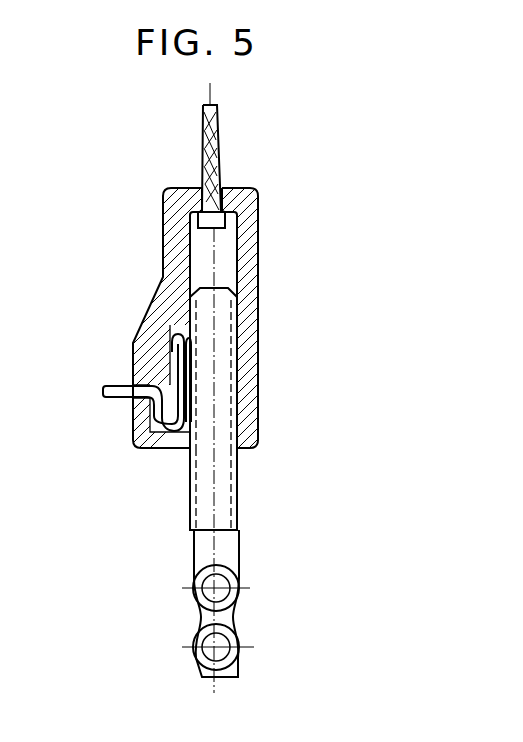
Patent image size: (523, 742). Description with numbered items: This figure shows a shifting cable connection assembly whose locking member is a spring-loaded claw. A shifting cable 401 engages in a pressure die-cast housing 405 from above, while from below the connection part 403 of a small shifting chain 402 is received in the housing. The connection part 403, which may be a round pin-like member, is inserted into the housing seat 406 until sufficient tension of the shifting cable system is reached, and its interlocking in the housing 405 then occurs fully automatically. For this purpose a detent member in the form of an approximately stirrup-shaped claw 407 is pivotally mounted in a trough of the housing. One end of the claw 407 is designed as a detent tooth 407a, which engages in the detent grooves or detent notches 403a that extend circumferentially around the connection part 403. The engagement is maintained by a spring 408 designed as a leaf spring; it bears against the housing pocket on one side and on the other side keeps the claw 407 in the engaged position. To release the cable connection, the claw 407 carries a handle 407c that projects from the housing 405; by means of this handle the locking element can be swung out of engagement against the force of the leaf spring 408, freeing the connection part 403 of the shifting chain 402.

The shifting cable 401 is at (217, 142).
The small shifting chain 402 is at (225, 613).
The connection part 403 is at (222, 333).
The detent notches 403a is at (236, 476).
The pressure die-cast housing 405 is at (247, 237).
The housing seat 406 is at (222, 258).
The claw 407 is at (152, 388).
The detent tooth 407a is at (172, 352).
The handle 407c is at (103, 395).
The leaf spring 408 is at (182, 362).